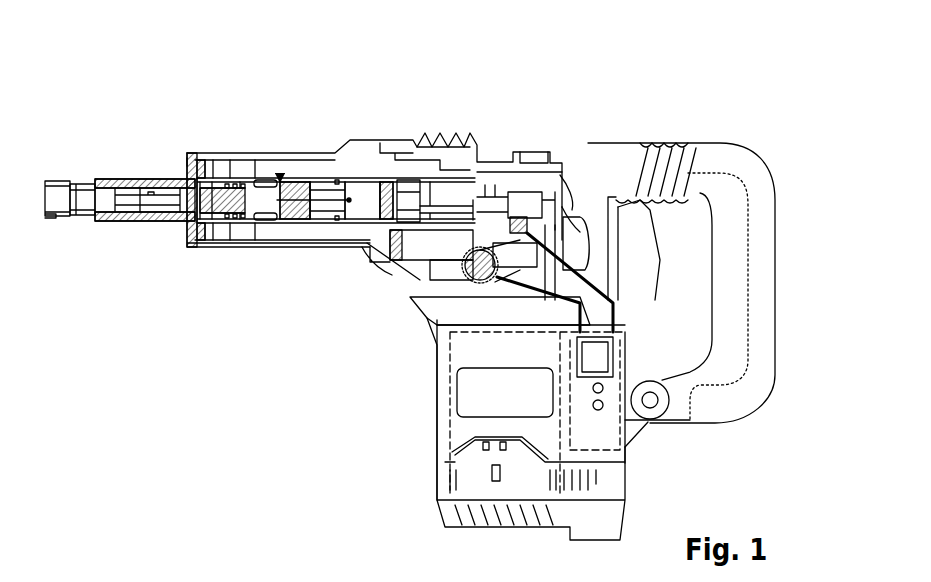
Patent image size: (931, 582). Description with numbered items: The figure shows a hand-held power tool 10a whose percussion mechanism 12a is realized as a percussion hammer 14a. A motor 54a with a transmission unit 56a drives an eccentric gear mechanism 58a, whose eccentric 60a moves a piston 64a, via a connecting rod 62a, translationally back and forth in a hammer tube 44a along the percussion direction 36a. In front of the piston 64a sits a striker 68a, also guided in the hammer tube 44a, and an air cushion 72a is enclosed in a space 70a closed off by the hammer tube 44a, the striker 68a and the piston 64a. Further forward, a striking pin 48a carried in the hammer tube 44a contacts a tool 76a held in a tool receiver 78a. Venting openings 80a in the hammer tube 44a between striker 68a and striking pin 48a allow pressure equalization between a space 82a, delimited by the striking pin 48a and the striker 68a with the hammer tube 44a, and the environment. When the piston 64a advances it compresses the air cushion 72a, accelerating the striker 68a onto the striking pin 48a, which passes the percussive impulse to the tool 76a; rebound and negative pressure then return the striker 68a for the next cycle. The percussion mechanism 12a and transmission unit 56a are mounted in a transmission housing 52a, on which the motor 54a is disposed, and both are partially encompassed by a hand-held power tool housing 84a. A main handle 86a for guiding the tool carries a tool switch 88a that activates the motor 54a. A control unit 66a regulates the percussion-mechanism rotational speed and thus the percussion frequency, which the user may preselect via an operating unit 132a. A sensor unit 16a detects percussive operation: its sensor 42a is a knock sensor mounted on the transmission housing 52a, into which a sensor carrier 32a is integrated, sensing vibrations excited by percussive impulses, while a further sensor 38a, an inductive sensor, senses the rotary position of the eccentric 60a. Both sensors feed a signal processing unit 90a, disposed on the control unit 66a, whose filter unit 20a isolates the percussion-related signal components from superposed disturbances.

The hand-held power tool 10a is at (633, 88).
The percussion mechanism 12a is at (472, 150).
The percussion hammer 14a is at (188, 118).
The sensor unit 16a is at (625, 300).
The filter unit 20a is at (617, 350).
The sensor carrier 32a is at (433, 333).
The percussion direction 36a is at (280, 225).
The further sensor 38a is at (567, 197).
The sensor 42a is at (433, 356).
The hammer tube 44a is at (310, 225).
The striking pin 48a is at (185, 245).
The transmission housing 52a is at (420, 280).
The motor 54a is at (450, 437).
The transmission unit 56a is at (440, 396).
The eccentric gear mechanism 58a is at (583, 258).
The eccentric 60a is at (557, 203).
The connecting rod 62a is at (530, 152).
The piston 64a is at (376, 255).
The control unit 66a is at (630, 453).
The striker 68a is at (322, 150).
The space 70a is at (407, 148).
The air cushion 72a is at (365, 148).
The tool 76a is at (98, 208).
The tool receiver 78a is at (163, 222).
The venting openings 80a is at (278, 150).
The space 82a is at (250, 240).
The hand-held power tool housing 84a is at (445, 143).
The main handle 86a is at (718, 193).
The tool switch 88a is at (688, 217).
The signal processing unit 90a is at (625, 328).
The operating unit 132a is at (648, 423).